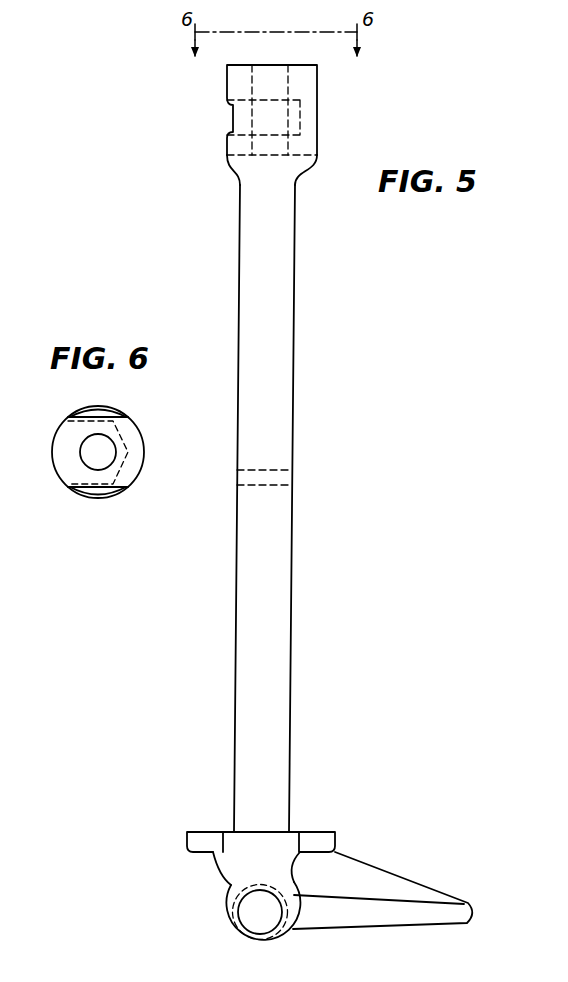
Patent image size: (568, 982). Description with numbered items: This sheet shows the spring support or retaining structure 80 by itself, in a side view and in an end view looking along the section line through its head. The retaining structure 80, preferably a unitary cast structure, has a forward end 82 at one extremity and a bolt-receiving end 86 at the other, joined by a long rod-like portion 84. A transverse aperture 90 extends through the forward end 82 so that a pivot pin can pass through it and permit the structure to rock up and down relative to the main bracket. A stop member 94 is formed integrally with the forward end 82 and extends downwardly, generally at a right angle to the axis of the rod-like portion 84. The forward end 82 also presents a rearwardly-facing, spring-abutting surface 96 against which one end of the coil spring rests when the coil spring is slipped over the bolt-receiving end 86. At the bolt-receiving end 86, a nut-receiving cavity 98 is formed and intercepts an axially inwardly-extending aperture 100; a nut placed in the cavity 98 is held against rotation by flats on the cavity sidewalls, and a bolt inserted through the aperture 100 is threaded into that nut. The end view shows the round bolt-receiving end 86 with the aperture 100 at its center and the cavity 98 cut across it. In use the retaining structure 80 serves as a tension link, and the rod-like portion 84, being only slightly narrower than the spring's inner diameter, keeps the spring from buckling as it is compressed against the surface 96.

In FIG. 5, the spring support or retaining structure 80 is at (237, 231).
In FIG. 5, the forward end 82 is at (223, 898).
In FIG. 5, the rod-like portion 84 is at (237, 606).
In FIG. 6, the rod-like portion 84 is at (98, 502).
In FIG. 5, the bolt-receiving end 86 is at (317, 116).
In FIG. 6, the bolt-receiving end 86 is at (54, 440).
In FIG. 5, the transverse aperture 90 is at (250, 928).
In FIG. 5, the stop member 94 is at (426, 915).
In FIG. 5, the spring-abutting surface 96 is at (204, 819).
In FIG. 5, the nut-receiving cavity 98 is at (240, 133).
In FIG. 6, the nut-receiving cavity 98 is at (70, 478).
In FIG. 5, the axially inwardly-extending aperture 100 is at (254, 81).
In FIG. 6, the axially inwardly-extending aperture 100 is at (84, 446).